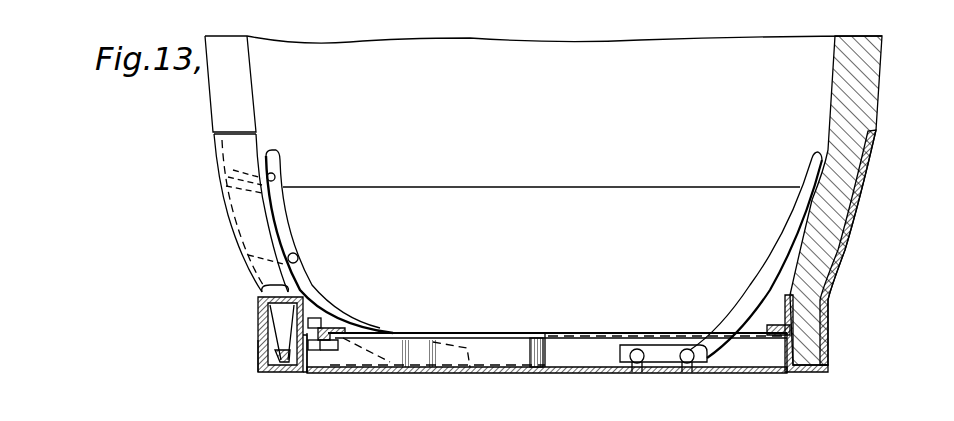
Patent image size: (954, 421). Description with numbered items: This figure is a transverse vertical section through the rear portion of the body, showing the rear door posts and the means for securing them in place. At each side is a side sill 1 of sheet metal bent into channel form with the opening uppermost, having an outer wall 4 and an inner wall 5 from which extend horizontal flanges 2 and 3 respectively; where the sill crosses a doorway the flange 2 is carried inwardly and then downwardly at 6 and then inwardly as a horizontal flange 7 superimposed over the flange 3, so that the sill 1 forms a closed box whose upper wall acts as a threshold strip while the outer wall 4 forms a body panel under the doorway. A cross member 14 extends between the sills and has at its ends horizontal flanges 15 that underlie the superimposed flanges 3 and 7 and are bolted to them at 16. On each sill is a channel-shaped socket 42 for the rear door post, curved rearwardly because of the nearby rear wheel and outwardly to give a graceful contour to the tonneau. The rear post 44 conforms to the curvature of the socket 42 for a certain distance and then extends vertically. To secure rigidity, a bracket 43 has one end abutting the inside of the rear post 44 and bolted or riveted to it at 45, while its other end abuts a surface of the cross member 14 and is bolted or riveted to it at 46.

The side sill 1 is at (277, 372).
The horizontal flange 2 is at (262, 290).
The horizontal flange 3 is at (330, 333).
The outer wall 4 is at (262, 345).
The inner wall 5 is at (306, 373).
The downward extension 6 is at (268, 321).
The horizontal flange 7 is at (330, 327).
The cross member 14 is at (518, 347).
The horizontal flange 15 is at (333, 350).
The bolt 16 is at (317, 318).
The socket 42 is at (260, 229).
The bracket 43 is at (293, 230).
The rear post 44 is at (237, 100).
The bolt or rivet 45 is at (235, 180).
The bolt or rivet 46 is at (687, 363).